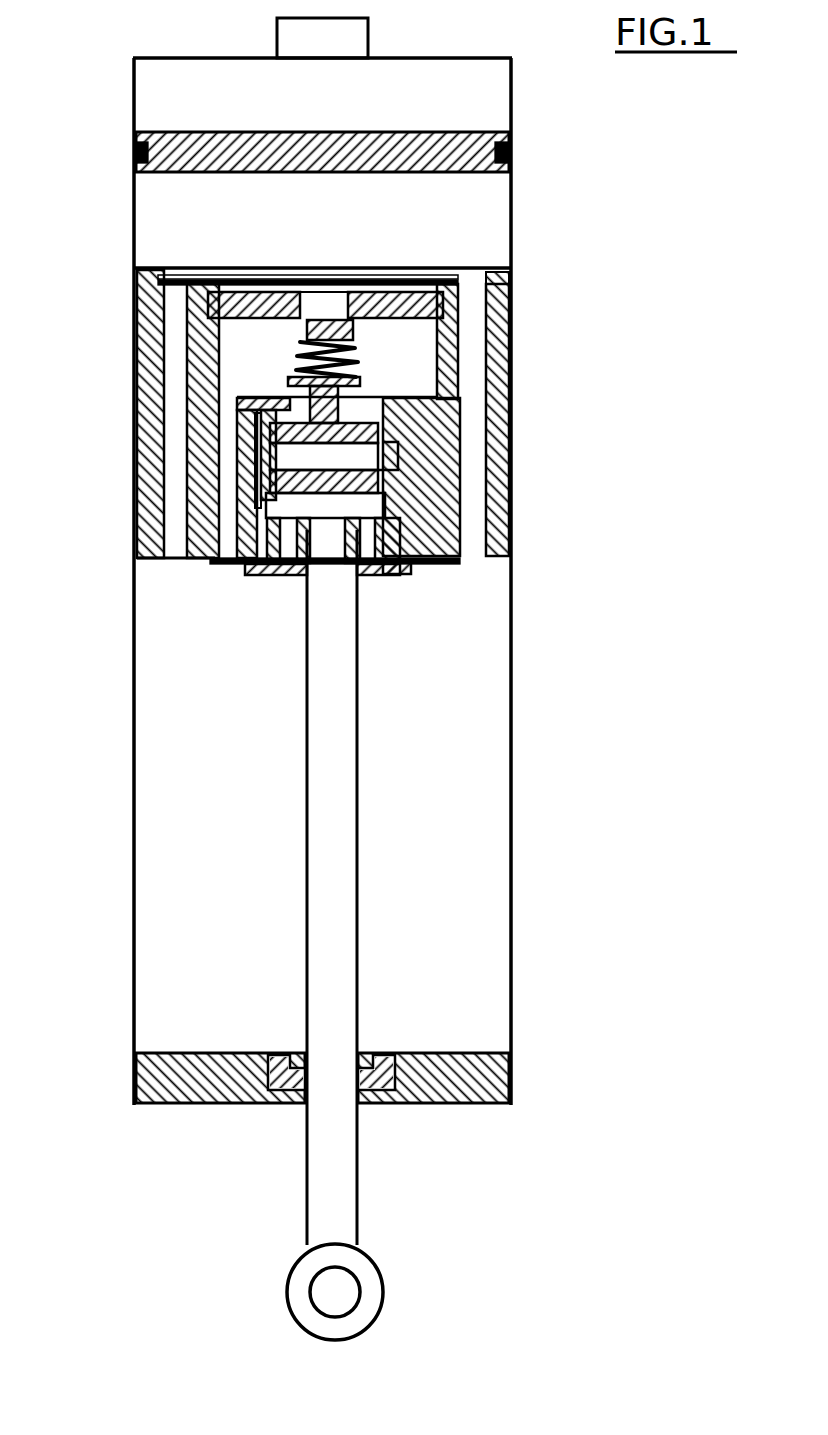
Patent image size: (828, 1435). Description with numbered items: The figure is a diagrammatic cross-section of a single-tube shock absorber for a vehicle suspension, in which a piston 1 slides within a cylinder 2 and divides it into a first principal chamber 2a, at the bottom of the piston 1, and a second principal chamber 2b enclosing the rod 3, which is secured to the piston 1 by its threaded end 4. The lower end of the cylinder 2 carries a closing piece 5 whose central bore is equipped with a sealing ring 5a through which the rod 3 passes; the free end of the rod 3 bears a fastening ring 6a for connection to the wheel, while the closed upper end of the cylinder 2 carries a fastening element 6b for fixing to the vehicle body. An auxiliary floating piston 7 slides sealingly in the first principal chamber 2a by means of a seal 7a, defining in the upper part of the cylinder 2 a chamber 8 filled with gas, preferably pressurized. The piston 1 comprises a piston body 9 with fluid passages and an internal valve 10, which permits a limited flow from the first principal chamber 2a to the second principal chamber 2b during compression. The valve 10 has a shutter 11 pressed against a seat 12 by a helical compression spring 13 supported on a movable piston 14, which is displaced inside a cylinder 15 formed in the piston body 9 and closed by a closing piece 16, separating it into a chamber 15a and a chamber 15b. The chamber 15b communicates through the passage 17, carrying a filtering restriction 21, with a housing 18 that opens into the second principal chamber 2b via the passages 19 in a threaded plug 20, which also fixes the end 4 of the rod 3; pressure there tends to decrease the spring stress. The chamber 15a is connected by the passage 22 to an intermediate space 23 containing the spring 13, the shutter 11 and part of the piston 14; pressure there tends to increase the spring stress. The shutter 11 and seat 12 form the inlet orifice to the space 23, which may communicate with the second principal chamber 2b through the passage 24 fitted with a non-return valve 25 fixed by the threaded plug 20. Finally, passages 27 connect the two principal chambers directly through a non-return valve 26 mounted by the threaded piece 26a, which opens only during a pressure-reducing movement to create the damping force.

The piston 1 is at (134, 378).
The cylinder 2 is at (134, 668).
The first principal chamber 2a is at (185, 198).
The second principal chamber 2b is at (185, 688).
The rod 3 is at (318, 693).
The threaded end 4 is at (330, 568).
The closing piece 5 is at (165, 1065).
The sealing ring 5a is at (280, 1068).
The fastening ring 6a is at (300, 1293).
The fastening element 6b is at (300, 34).
The auxiliary floating piston 7 is at (185, 140).
The seal 7a is at (136, 152).
The chamber 8 is at (180, 75).
The piston body 9 is at (150, 537).
The valve 10 is at (290, 358).
The shutter 11 is at (300, 330).
The seat 12 is at (215, 305).
The helical compression spring 13 is at (305, 396).
The movable piston 14 is at (255, 425).
The cylinder 15 is at (355, 442).
The chamber 15a is at (360, 475).
The chamber 15b is at (360, 425).
The closing piece 16 is at (365, 505).
The passage 17 is at (258, 455).
The housing 18 is at (400, 495).
The passages 19 is at (443, 560).
The threaded plug 20 is at (392, 574).
The filtering restriction 21 is at (245, 482).
The passage 22 is at (392, 470).
The intermediate space 23 is at (415, 378).
The passage 24 is at (205, 490).
The non-return valve 25 is at (382, 562).
The non-return valve 26 is at (456, 282).
The threaded piece 26a is at (500, 287).
The passages 27 is at (150, 292).